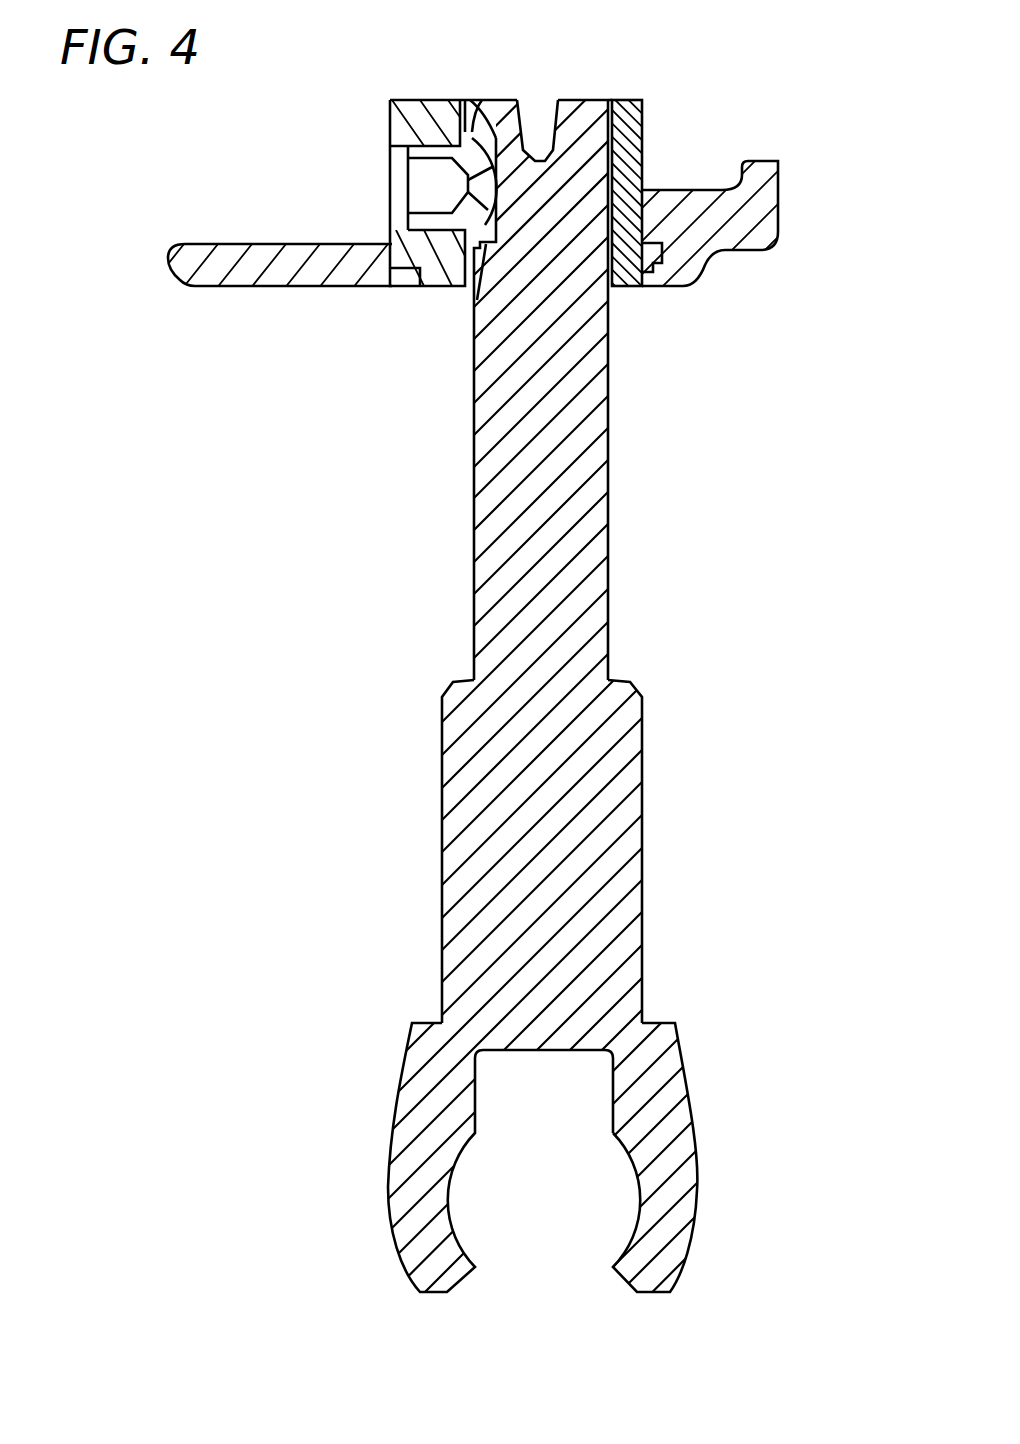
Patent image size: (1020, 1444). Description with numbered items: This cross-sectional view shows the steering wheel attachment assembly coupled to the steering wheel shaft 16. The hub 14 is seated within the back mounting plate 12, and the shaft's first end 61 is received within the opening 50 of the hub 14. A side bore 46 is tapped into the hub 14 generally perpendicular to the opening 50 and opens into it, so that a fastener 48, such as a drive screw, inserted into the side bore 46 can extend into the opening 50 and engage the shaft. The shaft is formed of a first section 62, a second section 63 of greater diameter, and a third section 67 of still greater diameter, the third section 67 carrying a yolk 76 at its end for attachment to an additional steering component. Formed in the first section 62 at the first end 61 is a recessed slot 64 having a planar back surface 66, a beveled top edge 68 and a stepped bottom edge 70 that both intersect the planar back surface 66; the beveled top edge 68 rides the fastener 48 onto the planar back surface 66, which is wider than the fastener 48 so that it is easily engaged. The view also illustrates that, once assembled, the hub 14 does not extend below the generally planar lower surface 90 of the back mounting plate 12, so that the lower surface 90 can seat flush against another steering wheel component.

The back mounting plate 12 is at (757, 262).
The hub 14 is at (652, 128).
The steering wheel shaft 16 is at (622, 589).
The side bore 46 is at (398, 255).
The fastener 48 is at (392, 151).
The opening 50 is at (603, 100).
The first end 61 is at (571, 100).
The first section 62 is at (462, 484).
The second section 63 is at (430, 849).
The recessed slot 64 is at (462, 133).
The planar back surface 66 is at (503, 122).
The third section 67 is at (398, 1075).
The beveled top edge 68 is at (490, 128).
The stepped bottom edge 70 is at (479, 275).
The yolk 76 is at (660, 1262).
The lower surface 90 is at (392, 283).